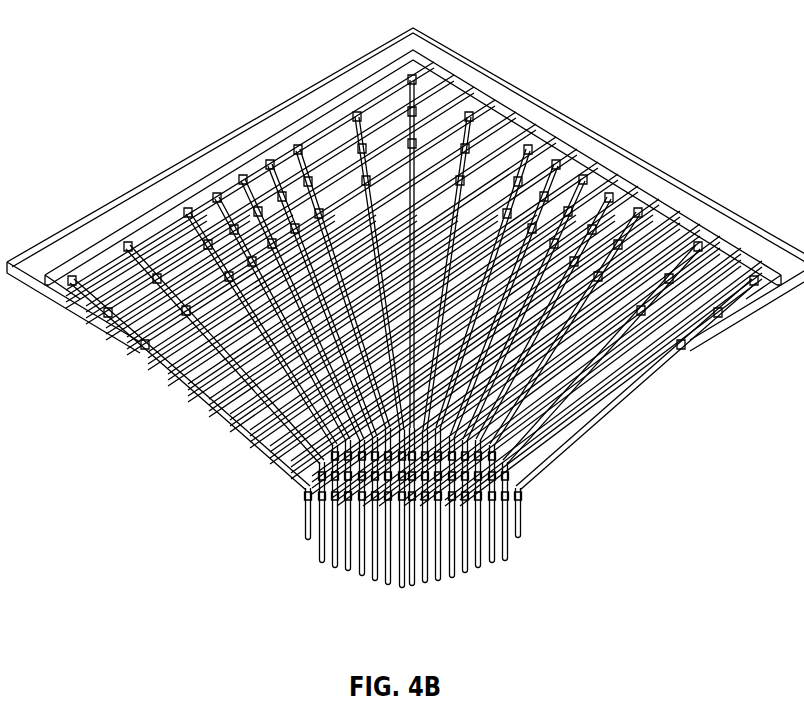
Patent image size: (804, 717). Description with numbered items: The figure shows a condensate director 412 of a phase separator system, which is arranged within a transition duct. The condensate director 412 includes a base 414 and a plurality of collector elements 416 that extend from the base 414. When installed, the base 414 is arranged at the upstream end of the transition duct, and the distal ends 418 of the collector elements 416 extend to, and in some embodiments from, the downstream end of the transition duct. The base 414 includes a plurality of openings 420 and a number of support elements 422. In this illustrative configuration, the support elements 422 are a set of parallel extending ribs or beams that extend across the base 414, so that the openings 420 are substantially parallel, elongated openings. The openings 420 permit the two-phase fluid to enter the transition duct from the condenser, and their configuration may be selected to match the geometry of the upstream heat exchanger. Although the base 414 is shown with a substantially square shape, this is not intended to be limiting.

The condensate director 412 is at (181, 92).
The base 414 is at (107, 213).
The collector elements 416 is at (256, 444).
The distal ends 418 is at (336, 572).
The openings 420 is at (545, 128).
The support elements 422 is at (490, 124).